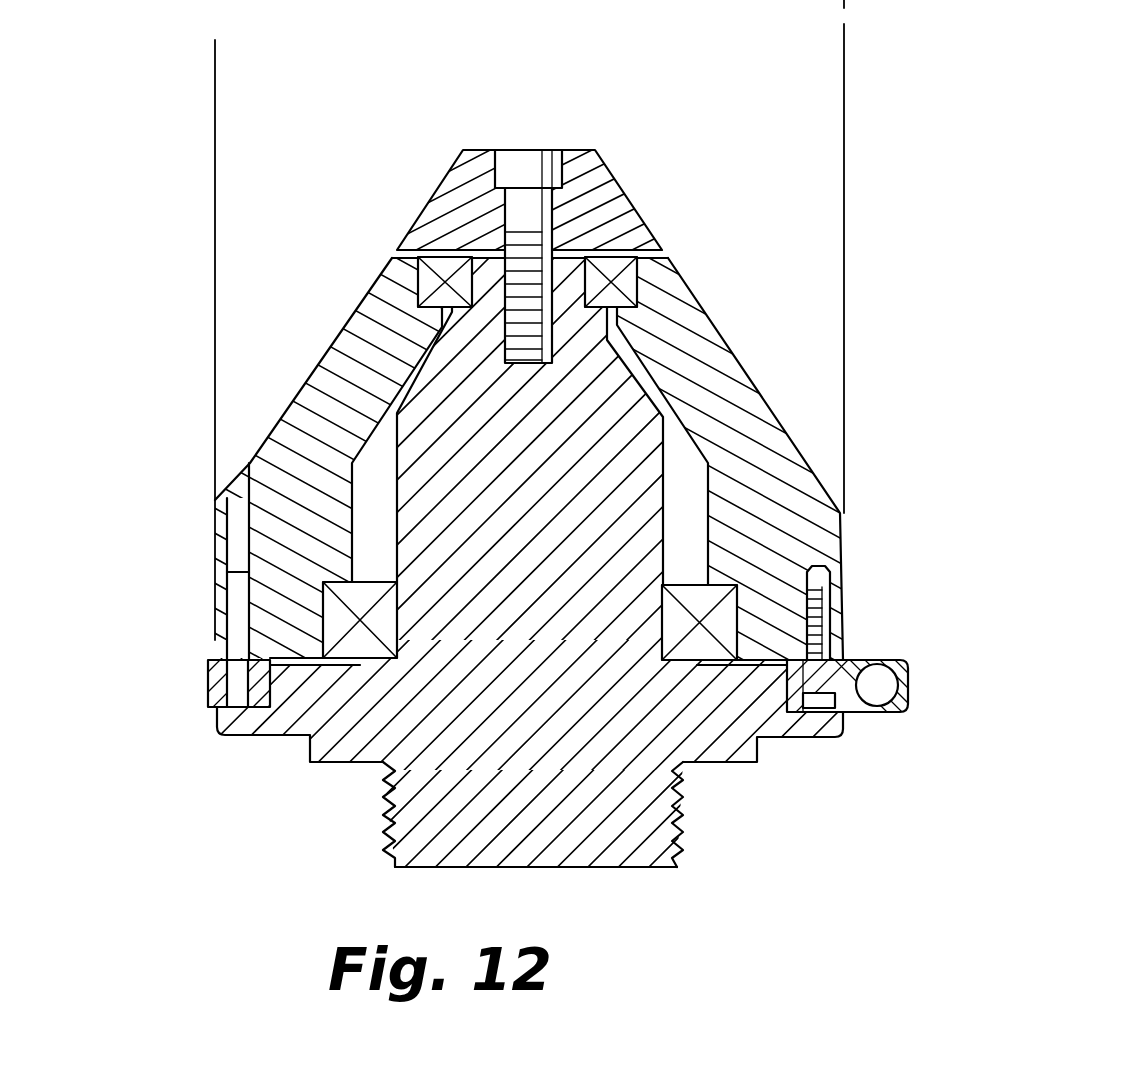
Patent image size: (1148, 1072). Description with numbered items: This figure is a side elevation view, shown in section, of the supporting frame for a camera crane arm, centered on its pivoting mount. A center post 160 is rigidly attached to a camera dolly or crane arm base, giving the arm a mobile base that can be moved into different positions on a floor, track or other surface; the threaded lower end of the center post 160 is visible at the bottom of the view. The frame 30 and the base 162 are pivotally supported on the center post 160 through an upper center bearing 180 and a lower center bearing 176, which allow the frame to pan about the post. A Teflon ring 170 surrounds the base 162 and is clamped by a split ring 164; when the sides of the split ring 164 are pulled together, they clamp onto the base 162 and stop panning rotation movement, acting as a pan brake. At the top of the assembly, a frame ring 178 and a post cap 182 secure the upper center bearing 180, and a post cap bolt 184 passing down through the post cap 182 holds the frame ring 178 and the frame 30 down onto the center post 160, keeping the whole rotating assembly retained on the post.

The frame 30 is at (808, 165).
The center post 160 is at (685, 840).
The base 162 is at (397, 723).
The split ring 164 is at (848, 662).
The Teflon ring 170 is at (282, 672).
The lower center bearing 176 is at (675, 620).
The frame ring 178 is at (708, 370).
The upper center bearing 180 is at (642, 290).
The post cap 182 is at (605, 198).
The post cap bolt 184 is at (520, 167).